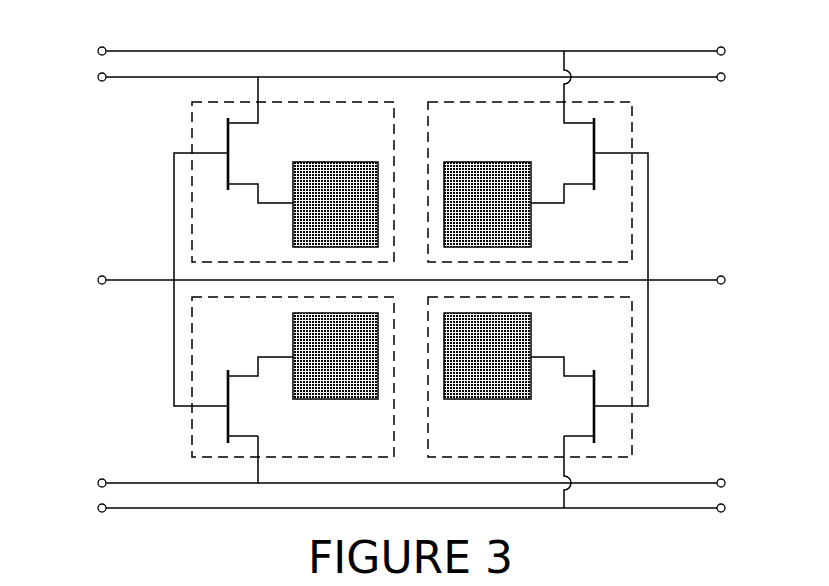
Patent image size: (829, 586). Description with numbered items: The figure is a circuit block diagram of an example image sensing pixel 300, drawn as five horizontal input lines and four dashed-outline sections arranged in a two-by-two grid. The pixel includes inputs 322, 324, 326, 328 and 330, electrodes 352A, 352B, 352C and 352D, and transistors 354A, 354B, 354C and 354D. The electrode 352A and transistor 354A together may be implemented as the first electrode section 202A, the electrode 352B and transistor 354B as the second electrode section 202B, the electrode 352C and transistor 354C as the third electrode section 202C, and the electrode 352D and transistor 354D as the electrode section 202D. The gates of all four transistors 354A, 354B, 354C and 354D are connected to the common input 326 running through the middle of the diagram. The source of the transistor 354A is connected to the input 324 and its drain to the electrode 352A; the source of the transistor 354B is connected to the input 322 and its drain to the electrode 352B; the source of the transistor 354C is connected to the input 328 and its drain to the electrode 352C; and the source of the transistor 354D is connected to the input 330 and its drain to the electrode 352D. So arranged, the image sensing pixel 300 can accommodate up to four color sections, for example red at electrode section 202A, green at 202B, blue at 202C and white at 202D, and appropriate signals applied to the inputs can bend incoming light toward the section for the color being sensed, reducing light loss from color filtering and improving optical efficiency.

The image sensing pixel 300 is at (514, 26).
The input 322 is at (391, 51).
The input 324 is at (391, 77).
The input 326 is at (391, 280).
The input 328 is at (391, 483).
The input 330 is at (391, 508).
The first electrode section 202A is at (192, 137).
The second electrode section 202B is at (632, 135).
The third electrode section 202C is at (192, 423).
The electrode section 202D is at (632, 423).
The electrode 352A is at (369, 162).
The electrode 352B is at (453, 162).
The electrode 352C is at (369, 399).
The electrode 352D is at (453, 399).
The transistor 354A is at (226, 170).
The transistor 354B is at (595, 170).
The transistor 354C is at (226, 390).
The transistor 354D is at (595, 390).